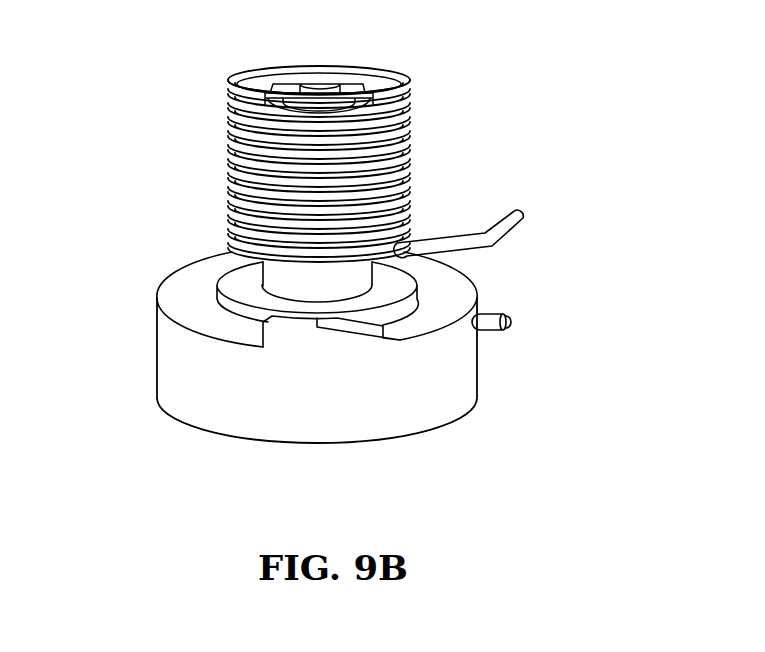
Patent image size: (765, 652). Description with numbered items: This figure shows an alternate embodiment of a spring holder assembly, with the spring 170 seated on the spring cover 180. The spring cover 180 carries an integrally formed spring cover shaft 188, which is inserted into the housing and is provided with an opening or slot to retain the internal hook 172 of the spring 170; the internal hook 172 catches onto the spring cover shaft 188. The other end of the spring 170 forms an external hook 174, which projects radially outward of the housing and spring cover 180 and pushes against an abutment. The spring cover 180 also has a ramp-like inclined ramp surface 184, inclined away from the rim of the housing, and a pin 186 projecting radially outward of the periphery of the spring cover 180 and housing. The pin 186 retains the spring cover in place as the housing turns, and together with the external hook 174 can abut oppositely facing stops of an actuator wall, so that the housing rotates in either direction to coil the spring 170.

The spring 170 is at (229, 135).
The internal hook 172 is at (397, 95).
The external hook 174 is at (543, 229).
The spring cover 180 is at (205, 389).
The inclined ramp surface 184 is at (288, 333).
The pin 186 is at (513, 318).
The spring cover shaft 188 is at (290, 285).